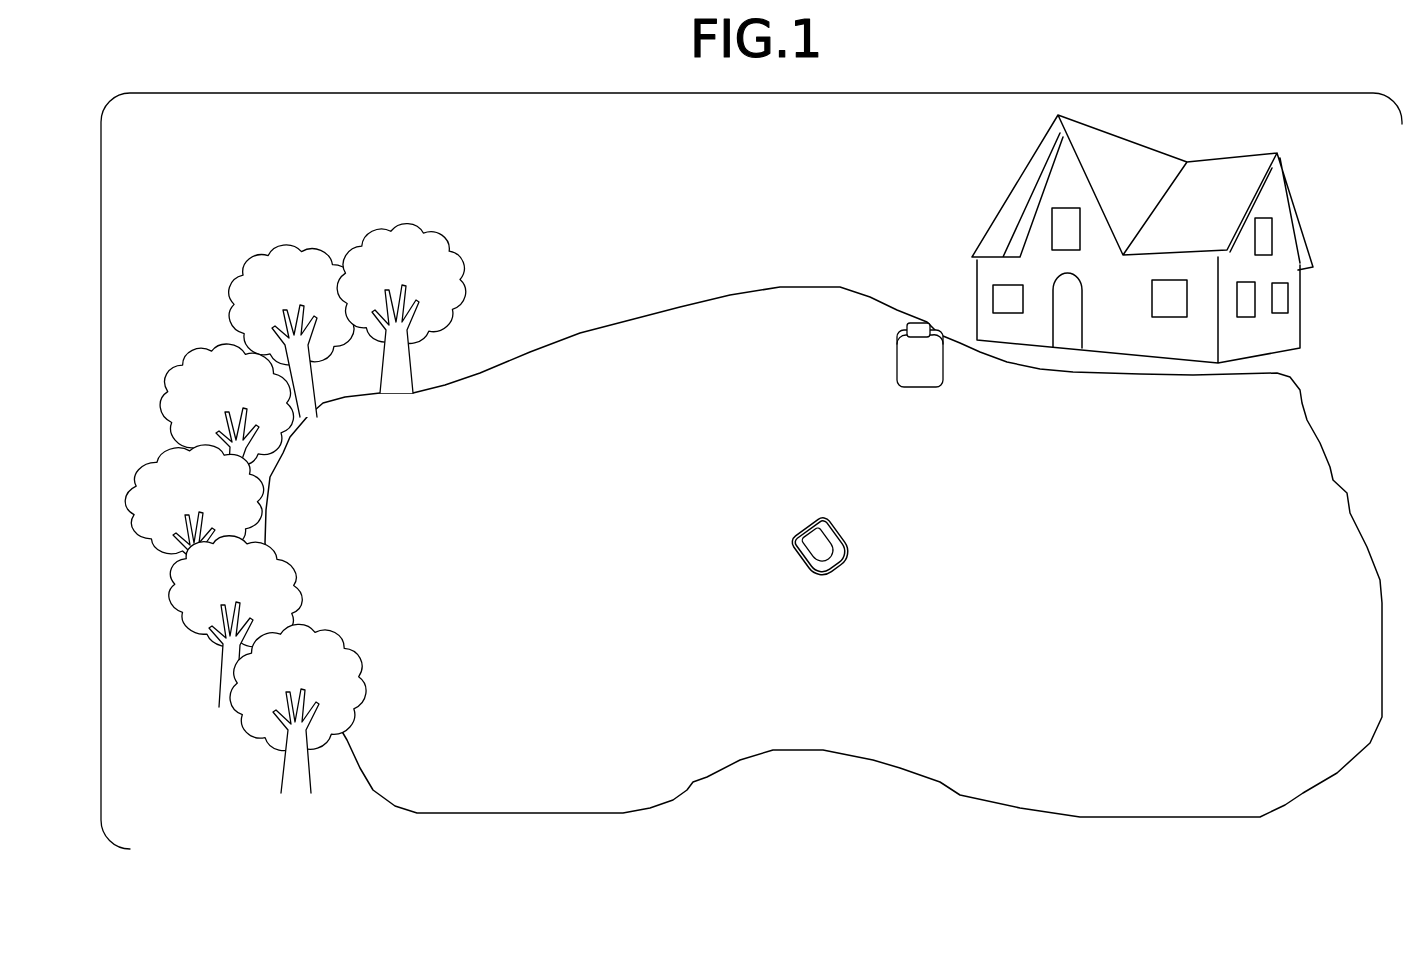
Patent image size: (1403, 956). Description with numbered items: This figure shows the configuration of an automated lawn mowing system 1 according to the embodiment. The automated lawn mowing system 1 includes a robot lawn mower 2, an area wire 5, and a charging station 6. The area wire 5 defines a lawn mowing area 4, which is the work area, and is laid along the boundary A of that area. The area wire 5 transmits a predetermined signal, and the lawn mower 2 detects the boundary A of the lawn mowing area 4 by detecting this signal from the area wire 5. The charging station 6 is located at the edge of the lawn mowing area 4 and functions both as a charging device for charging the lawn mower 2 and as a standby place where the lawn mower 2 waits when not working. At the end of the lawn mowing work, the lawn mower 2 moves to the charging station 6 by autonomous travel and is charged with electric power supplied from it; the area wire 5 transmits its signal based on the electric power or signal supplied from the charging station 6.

The automated lawn mowing system 1 is at (839, 204).
The robot lawn mower 2 is at (830, 538).
The lawn mowing area 4 is at (708, 491).
The area wire 5 is at (704, 291).
The charging station 6 is at (930, 367).
The boundary A is at (583, 336).